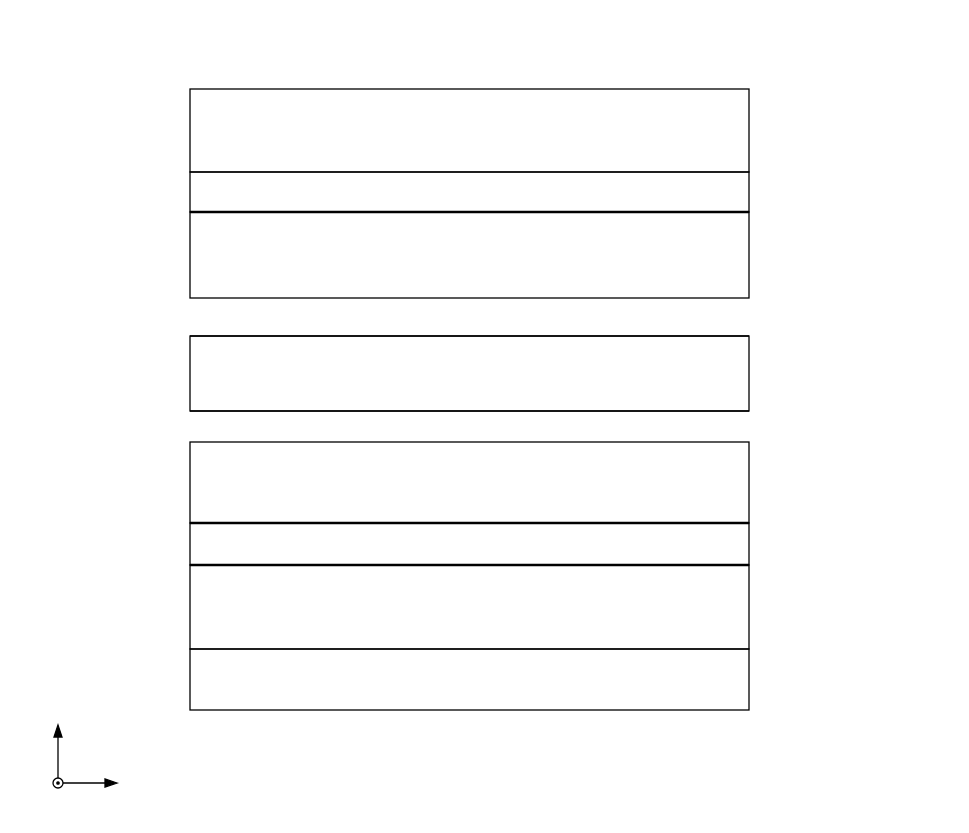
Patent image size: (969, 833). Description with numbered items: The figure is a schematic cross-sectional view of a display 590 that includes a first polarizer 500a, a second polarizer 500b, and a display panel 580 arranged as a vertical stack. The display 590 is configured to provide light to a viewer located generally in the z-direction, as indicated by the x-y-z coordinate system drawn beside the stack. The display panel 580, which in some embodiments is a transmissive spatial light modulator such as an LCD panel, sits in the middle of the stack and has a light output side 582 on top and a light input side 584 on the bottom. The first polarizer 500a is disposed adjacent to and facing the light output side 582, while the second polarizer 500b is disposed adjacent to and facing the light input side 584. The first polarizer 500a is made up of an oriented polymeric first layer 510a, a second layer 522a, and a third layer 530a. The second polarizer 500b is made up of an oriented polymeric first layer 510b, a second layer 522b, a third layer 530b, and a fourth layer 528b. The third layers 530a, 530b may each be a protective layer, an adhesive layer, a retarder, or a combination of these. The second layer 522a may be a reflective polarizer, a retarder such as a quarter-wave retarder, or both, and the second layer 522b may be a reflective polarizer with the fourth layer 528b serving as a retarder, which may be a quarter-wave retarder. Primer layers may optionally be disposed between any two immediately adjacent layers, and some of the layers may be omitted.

The display 590 is at (146, 43).
The first polarizer 500a is at (783, 89).
The second polarizer 500b is at (783, 442).
The third layer 530a is at (208, 127).
The oriented polymeric first layer 510a is at (208, 189).
The second layer 522a is at (208, 262).
The third layer 530b is at (208, 474).
The oriented polymeric first layer 510b is at (208, 540).
The second layer 522b is at (208, 599).
The fourth layer 528b is at (208, 682).
The display panel 580 is at (728, 380).
The light output side 582 is at (729, 334).
The light input side 584 is at (213, 411).